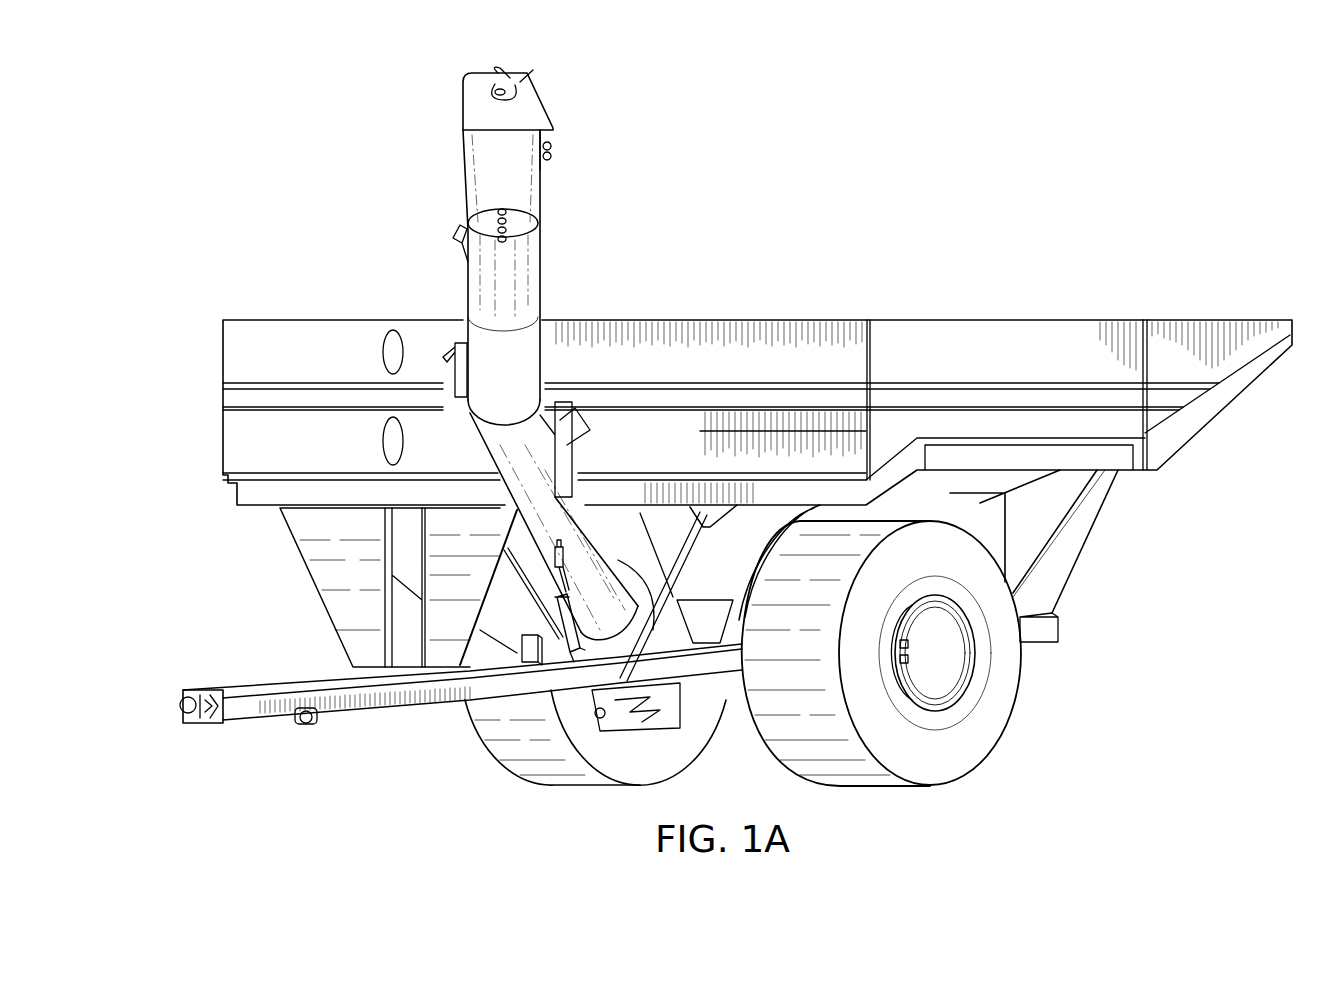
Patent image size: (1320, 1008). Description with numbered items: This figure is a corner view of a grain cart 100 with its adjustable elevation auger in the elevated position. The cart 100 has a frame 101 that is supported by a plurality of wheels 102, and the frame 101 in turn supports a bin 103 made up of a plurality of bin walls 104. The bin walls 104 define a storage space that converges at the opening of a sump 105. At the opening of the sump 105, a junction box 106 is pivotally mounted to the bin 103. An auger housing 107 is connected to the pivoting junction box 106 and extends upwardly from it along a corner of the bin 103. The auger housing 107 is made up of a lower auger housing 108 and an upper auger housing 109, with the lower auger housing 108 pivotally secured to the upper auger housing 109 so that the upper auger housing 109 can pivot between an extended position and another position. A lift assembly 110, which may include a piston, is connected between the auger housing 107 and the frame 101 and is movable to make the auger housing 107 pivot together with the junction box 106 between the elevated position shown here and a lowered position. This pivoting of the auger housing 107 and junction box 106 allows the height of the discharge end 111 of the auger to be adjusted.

The grain cart 100 is at (980, 232).
The frame 101 is at (310, 580).
The wheels 102 is at (490, 750).
The bin 103 is at (740, 333).
The bin walls 104 is at (815, 340).
The sump 105 is at (682, 640).
The junction box 106 is at (655, 643).
The auger housing 107 is at (463, 272).
The lower auger housing 108 is at (541, 515).
The upper auger housing 109 is at (527, 283).
The lift assembly 110 is at (560, 645).
The discharge end 111 is at (462, 158).